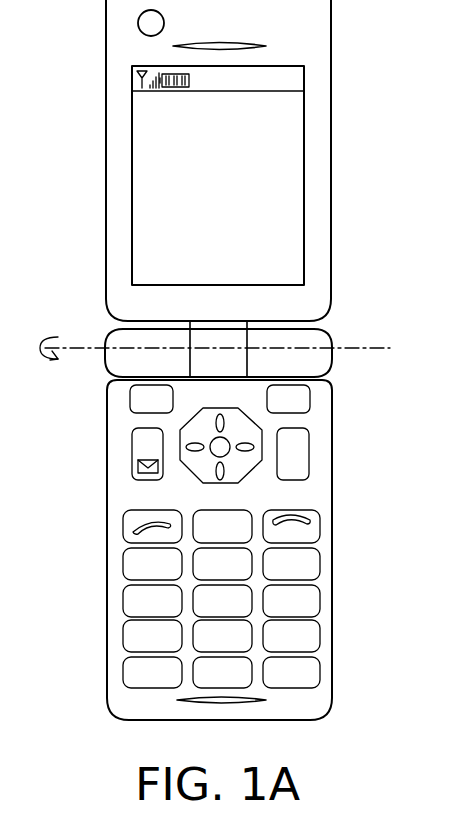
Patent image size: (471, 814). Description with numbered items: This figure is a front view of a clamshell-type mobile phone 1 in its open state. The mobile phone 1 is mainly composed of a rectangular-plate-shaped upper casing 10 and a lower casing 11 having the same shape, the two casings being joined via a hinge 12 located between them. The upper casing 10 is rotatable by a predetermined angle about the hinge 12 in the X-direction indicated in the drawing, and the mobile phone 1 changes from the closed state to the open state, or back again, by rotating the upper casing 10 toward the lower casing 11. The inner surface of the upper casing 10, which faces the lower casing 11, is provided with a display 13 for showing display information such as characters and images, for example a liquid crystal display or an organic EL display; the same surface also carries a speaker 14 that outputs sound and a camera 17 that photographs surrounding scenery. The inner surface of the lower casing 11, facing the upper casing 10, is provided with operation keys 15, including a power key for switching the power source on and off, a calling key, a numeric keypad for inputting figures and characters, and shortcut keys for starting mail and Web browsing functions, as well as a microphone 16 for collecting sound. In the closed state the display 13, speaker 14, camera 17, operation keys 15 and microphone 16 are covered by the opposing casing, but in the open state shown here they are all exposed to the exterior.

The mobile phone 1 is at (360, 592).
The upper casing 10 is at (316, 150).
The lower casing 11 is at (333, 441).
The hinge 12 is at (333, 336).
The display 13 is at (293, 190).
The speaker 14 is at (262, 44).
The operation keys 15 is at (96, 398).
The microphone 16 is at (263, 700).
The camera 17 is at (138, 23).